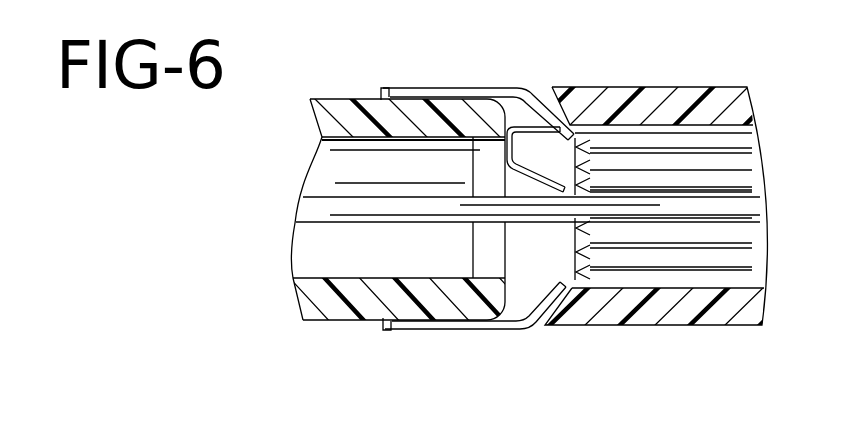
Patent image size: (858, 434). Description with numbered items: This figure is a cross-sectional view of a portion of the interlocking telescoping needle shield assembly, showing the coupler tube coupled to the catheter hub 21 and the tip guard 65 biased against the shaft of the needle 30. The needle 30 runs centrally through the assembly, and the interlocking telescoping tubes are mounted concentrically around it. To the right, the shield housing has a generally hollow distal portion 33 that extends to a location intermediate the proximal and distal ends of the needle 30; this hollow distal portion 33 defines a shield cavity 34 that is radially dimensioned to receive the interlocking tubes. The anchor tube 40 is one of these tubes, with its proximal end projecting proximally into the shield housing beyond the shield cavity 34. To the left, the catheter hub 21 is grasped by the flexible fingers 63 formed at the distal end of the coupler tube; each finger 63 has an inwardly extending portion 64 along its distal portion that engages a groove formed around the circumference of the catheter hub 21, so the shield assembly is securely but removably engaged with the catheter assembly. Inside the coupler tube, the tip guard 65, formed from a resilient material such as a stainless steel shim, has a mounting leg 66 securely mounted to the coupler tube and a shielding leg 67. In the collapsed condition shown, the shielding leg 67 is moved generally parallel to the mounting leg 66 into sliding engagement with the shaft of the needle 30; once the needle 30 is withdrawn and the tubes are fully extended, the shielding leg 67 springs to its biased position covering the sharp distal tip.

The catheter hub 21 is at (343, 99).
The needle 30 is at (323, 213).
The hollow distal portion 33 is at (680, 87).
The shield cavity 34 is at (752, 135).
The anchor tube 40 is at (750, 180).
The flexible fingers 63 is at (442, 195).
The inwardly extending portion 64 is at (385, 88).
The tip guard 65 is at (480, 148).
The mounting leg 66 is at (525, 100).
The shielding leg 67 is at (535, 180).